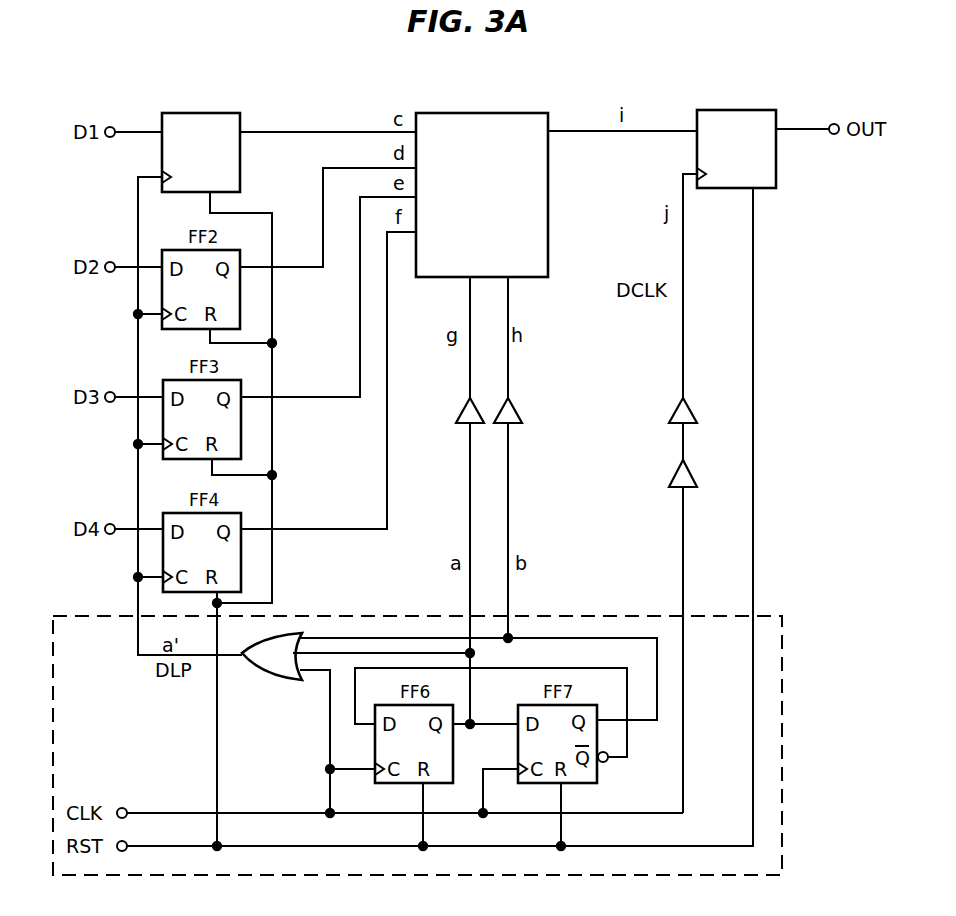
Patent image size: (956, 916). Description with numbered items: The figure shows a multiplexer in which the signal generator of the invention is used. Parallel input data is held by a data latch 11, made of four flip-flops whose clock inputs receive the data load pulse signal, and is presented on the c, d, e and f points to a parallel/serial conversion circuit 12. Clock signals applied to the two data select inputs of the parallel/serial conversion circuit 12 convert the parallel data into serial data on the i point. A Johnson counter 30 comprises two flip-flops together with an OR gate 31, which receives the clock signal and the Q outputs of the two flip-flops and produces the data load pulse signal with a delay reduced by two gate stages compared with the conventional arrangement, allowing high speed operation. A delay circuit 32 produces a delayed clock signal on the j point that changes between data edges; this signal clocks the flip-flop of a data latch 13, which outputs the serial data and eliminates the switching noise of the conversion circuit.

The data latch 11 is at (228, 100).
The parallel/serial conversion circuit 12 is at (470, 112).
The data latch 13 is at (775, 110).
The Johnson counter 30 is at (657, 614).
The OR gate 31 is at (282, 622).
The delay circuit 32 is at (665, 398).